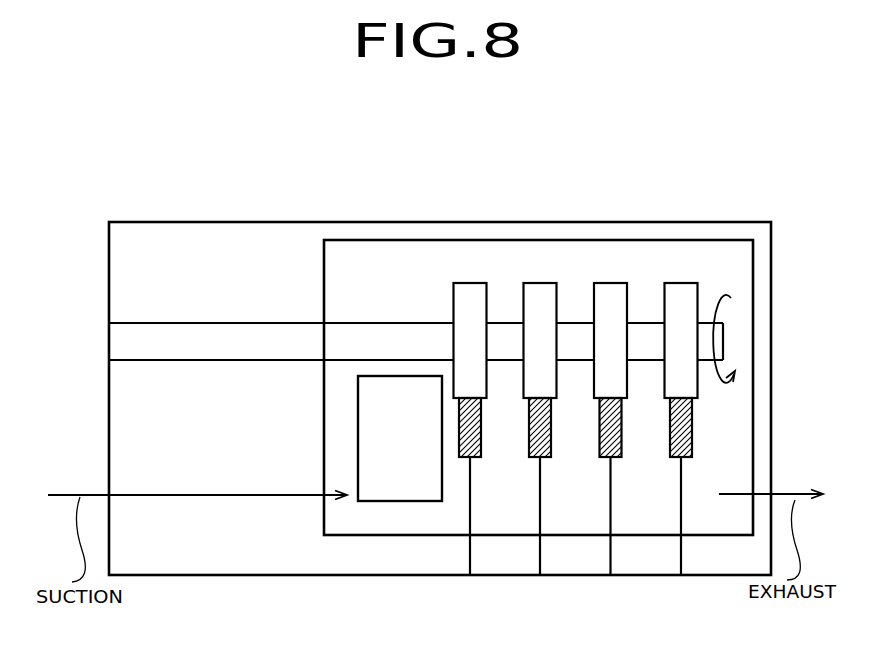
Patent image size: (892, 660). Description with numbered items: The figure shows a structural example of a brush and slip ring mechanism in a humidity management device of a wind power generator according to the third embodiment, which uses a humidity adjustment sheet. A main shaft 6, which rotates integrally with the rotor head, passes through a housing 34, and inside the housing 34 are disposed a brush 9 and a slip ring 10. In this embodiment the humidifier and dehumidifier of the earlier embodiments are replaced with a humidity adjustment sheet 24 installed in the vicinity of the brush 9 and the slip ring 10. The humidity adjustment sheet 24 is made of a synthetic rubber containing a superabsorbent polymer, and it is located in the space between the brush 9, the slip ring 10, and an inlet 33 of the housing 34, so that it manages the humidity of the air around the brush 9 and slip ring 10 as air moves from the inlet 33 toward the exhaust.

The main shaft 6 is at (147, 321).
The brush 9 is at (692, 430).
The slip ring 10 is at (683, 283).
The humidity adjustment sheet 24 is at (376, 502).
The inlet 33 is at (324, 492).
The housing 34 is at (753, 278).